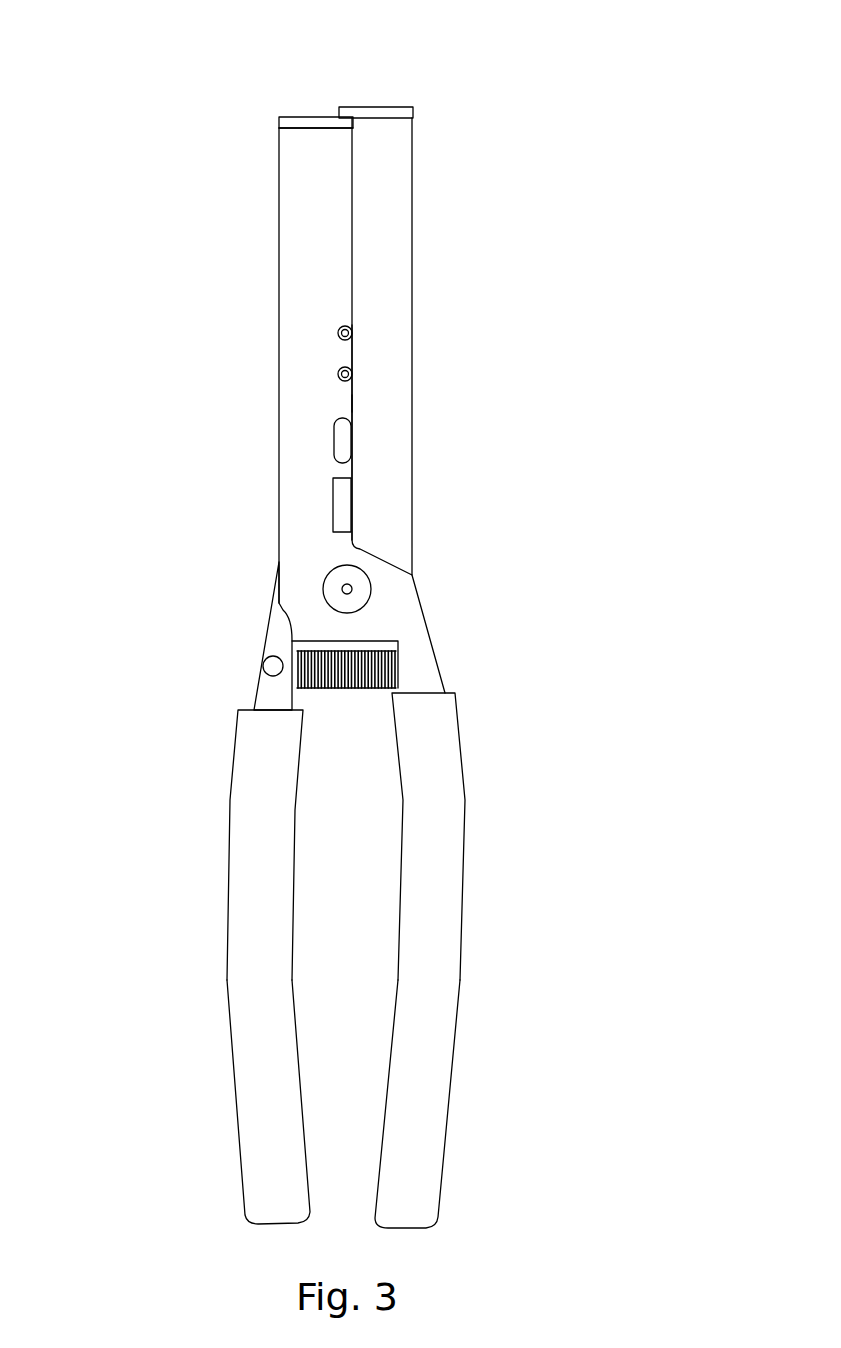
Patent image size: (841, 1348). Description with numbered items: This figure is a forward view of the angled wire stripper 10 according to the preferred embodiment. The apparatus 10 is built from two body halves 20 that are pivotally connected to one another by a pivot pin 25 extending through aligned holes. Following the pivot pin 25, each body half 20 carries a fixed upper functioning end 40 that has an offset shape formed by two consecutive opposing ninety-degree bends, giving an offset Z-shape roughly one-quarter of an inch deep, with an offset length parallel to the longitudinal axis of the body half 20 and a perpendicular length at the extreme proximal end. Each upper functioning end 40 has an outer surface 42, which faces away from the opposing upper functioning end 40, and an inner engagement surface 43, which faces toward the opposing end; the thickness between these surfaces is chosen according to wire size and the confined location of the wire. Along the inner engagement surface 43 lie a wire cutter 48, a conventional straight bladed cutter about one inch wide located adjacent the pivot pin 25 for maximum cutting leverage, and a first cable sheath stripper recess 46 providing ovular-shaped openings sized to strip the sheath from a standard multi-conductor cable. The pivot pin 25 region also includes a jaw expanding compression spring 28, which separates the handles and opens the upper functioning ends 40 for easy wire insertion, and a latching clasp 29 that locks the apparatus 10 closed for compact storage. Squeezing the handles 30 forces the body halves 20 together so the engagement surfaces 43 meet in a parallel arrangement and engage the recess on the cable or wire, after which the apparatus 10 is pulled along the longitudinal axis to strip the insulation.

The angled wire stripper 10 is at (596, 168).
The body half 20 is at (276, 808).
The pivot pin 25 is at (342, 589).
The jaw expanding compression spring 28 is at (375, 668).
The latching clasp 29 is at (275, 630).
The handle 30 is at (277, 1042).
The upper functioning end 40 is at (310, 283).
The outer surface 42 is at (315, 115).
The inner engagement surface 43 is at (352, 403).
The first cable sheath stripper recess 46 is at (352, 374).
The wire cutter 48 is at (352, 513).